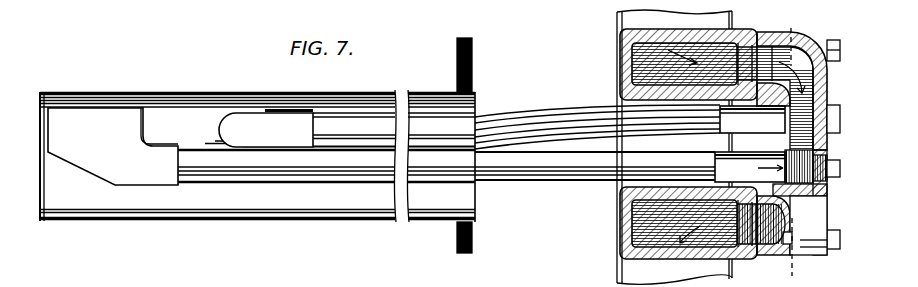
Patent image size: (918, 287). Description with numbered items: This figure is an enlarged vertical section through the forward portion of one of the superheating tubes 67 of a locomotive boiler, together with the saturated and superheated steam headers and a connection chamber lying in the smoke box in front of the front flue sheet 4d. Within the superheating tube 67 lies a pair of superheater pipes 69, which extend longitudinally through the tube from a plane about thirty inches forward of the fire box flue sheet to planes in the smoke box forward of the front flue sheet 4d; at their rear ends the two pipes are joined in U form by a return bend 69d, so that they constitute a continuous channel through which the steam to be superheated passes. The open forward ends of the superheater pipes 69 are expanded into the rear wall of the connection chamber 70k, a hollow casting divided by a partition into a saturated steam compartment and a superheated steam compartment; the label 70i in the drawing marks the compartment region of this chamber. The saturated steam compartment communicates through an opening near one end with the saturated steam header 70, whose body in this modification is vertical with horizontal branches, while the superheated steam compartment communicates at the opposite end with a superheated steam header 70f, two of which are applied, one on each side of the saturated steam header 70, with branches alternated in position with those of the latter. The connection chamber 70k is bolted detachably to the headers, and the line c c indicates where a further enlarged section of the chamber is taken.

The superheating tube 67 is at (257, 143).
The return bend 69d is at (113, 146).
The superheater pipes 69 is at (495, 143).
The front flue sheet 4d is at (481, 145).
The saturated steam header 70 is at (620, 71).
The superheated steam header 70f is at (620, 234).
The rod end block 70i is at (752, 130).
The connection chamber 70k is at (792, 225).
The section line c c is at (785, 150).